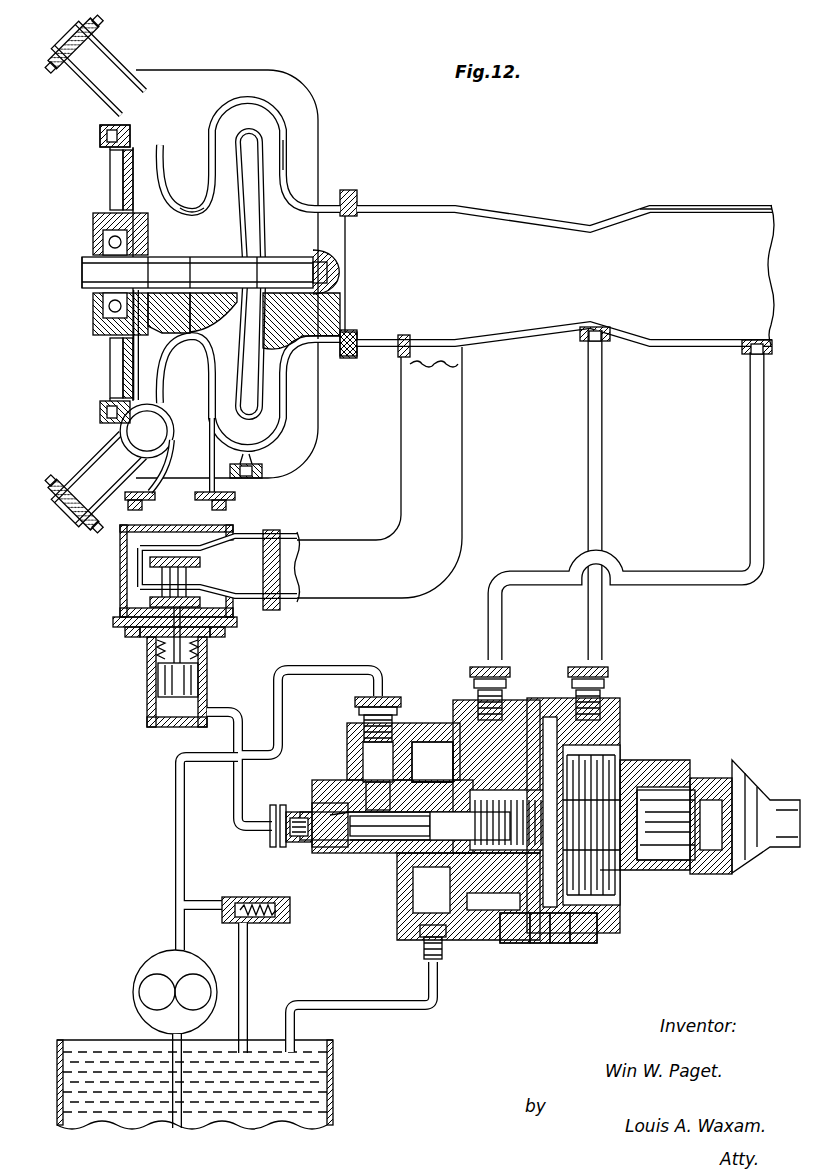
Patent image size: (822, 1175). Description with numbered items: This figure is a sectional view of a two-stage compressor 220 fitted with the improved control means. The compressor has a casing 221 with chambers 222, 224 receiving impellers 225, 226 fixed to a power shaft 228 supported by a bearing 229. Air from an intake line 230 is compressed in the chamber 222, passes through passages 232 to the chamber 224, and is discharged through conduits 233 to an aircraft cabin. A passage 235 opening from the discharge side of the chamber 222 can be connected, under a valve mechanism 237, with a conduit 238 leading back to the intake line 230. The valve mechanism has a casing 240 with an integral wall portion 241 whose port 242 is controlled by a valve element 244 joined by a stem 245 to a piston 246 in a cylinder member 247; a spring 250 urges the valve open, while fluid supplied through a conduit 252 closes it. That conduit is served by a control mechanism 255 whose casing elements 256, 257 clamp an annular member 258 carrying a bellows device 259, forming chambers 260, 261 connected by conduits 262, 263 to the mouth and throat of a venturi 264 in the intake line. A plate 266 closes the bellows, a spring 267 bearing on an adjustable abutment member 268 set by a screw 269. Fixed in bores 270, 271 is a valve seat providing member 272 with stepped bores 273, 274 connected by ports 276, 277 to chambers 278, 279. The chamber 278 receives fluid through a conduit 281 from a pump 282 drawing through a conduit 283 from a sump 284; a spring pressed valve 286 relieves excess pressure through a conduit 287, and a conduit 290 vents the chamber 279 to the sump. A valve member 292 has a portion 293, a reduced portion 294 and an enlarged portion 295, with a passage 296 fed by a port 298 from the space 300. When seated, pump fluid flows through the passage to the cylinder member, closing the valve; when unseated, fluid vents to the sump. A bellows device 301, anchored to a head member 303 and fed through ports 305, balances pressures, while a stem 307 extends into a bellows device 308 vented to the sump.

The two-stage compressor 220 is at (228, 52).
The casing 221 is at (265, 95).
The chamber 222 is at (276, 124).
The chamber 224 is at (105, 136).
The impeller 225 is at (288, 170).
The impeller 226 is at (118, 182).
The power shaft 228 is at (84, 285).
The bearing 229 is at (98, 238).
The intake line 230 is at (432, 206).
The passages 232 is at (213, 207).
The conduits 233 is at (70, 42).
The passage 235 is at (190, 470).
The valve mechanism 237 is at (112, 580).
The conduit 238 is at (400, 503).
The casing 240 is at (120, 552).
The wall portion 241 is at (137, 585).
The port 242 is at (215, 548).
The valve element 244 is at (200, 570).
The stem 245 is at (147, 655).
The piston 246 is at (158, 683).
The cylinder member 247 is at (147, 713).
The spring 250 is at (207, 661).
The conduit 252 is at (232, 736).
The control mechanism 255 is at (494, 946).
The casing element 256 is at (518, 945).
The casing element 257 is at (590, 945).
The annular member 258 is at (540, 945).
The bellows device 259 is at (563, 945).
The chamber 260 is at (475, 735).
The chamber 261 is at (625, 760).
The conduit 262 is at (750, 490).
The conduit 263 is at (603, 482).
The venturi 264 is at (668, 208).
The plate 266 is at (612, 915).
The spring 267 is at (645, 790).
The adjustable abutment member 268 is at (688, 880).
The screw 269 is at (728, 880).
The bore 270 is at (436, 890).
The bore 271 is at (388, 852).
The valve seat providing member 272 is at (400, 855).
The bore 273 is at (340, 850).
The bore 274 is at (432, 762).
The ports 276 is at (358, 786).
The ports 277 is at (405, 925).
The chamber 278 is at (365, 752).
The chamber 279 is at (450, 960).
The conduit 281 is at (175, 828).
The pump 282 is at (146, 968).
The conduit 283 is at (172, 1040).
The sump 284 is at (72, 1048).
The spring pressed valve 286 is at (260, 925).
The conduit 287 is at (250, 982).
The conduit 290 is at (405, 1010).
The valve member 292 is at (378, 733).
The portion 293 is at (312, 810).
The reduced portion 294 is at (381, 793).
The enlarged portion 295 is at (432, 778).
The passage 296 is at (300, 848).
The port 298 is at (358, 850).
The space 300 is at (390, 886).
The bellows device 301 is at (490, 800).
The head member 303 is at (548, 716).
The ports 305 is at (468, 760).
The stem 307 is at (493, 901).
The bellows device 308 is at (565, 720).